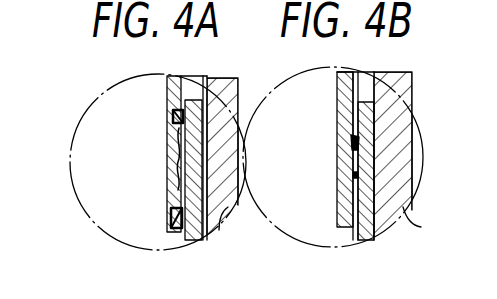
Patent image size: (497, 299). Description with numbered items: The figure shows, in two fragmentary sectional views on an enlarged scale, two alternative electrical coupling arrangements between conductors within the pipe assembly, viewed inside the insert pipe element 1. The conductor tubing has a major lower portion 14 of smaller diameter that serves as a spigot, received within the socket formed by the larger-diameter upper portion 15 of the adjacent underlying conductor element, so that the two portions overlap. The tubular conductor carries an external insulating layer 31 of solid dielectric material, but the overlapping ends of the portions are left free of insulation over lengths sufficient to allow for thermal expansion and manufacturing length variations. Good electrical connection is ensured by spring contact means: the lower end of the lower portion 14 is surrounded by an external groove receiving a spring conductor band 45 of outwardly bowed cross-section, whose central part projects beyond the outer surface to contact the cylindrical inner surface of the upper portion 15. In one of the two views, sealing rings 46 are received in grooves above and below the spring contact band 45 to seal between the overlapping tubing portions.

In FIG. 4A, the insert pipe element 1 is at (219, 232).
In FIG. 4B, the insert pipe element 1 is at (421, 227).
In FIG. 4A, the lower portion of conductor tubing 14 is at (170, 92).
In FIG. 4B, the lower portion of conductor tubing 14 is at (353, 74).
In FIG. 4A, the upper portion of conductor tubing 15 is at (188, 98).
In FIG. 4B, the upper portion of conductor tubing 15 is at (375, 103).
In FIG. 4A, the external insulating layer 31 is at (196, 235).
In FIG. 4B, the external insulating layer 31 is at (384, 130).
In FIG. 4A, the spring conductor band 45 is at (212, 140).
In FIG. 4B, the spring conductor band 45 is at (358, 172).
In FIG. 4A, the sealing rings 46 is at (172, 116).